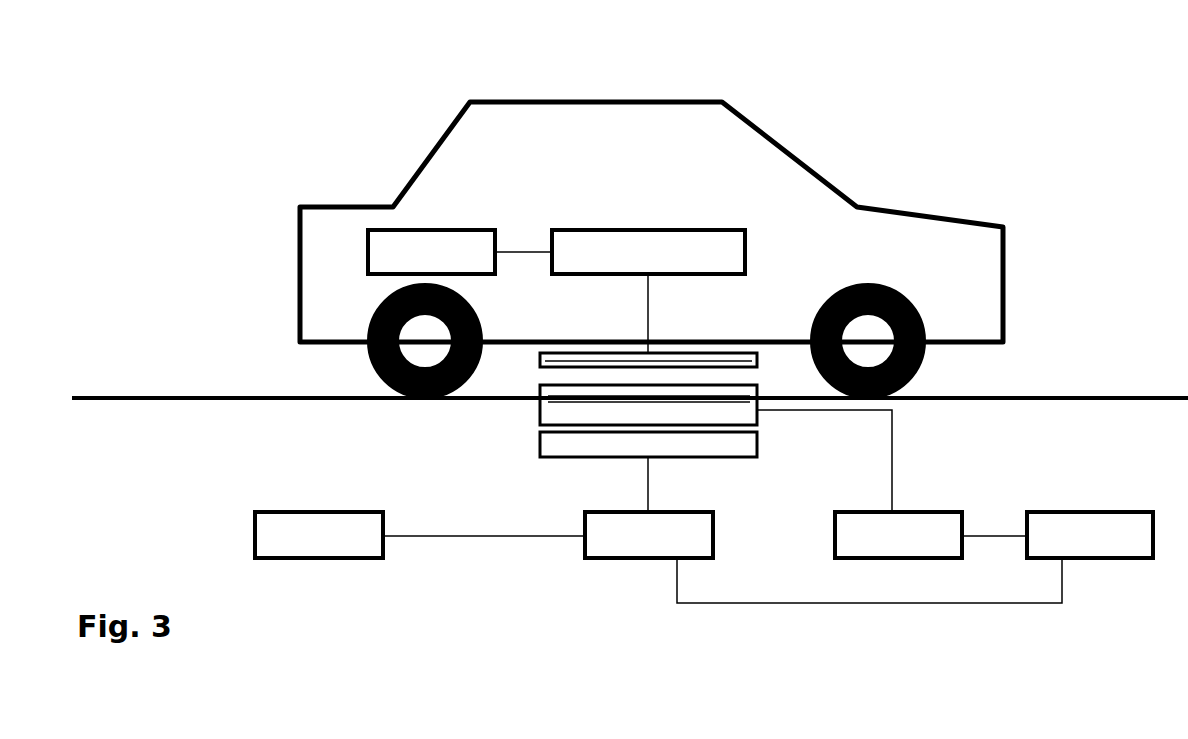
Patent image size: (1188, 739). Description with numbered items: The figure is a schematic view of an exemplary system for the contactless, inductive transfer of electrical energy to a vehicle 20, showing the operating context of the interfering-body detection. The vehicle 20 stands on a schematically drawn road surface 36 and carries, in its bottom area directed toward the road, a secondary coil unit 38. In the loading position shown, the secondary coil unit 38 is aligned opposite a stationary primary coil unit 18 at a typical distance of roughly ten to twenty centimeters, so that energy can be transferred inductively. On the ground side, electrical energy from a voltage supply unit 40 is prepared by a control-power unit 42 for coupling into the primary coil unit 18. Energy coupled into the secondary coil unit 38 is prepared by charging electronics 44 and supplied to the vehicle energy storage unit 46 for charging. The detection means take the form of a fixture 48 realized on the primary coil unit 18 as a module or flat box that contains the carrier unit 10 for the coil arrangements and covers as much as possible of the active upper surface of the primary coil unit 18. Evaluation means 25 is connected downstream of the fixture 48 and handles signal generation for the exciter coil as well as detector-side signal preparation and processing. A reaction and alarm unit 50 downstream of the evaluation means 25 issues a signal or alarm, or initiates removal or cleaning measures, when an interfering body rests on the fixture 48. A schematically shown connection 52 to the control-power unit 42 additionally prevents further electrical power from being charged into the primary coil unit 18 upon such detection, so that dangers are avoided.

The carrier unit 10 is at (690, 407).
The primary coil unit 18 is at (566, 458).
The vehicle 20 is at (505, 118).
The evaluation means 25 is at (937, 525).
The road surface 36 is at (175, 396).
The secondary coil unit 38 is at (745, 352).
The voltage supply unit 40 is at (302, 523).
The control-power unit 42 is at (583, 546).
The charging electronics 44 is at (710, 240).
The vehicle energy storage unit 46 is at (460, 243).
The fixture 48 is at (538, 412).
The reaction and alarm unit 50 is at (1095, 525).
The connection 52 is at (745, 603).